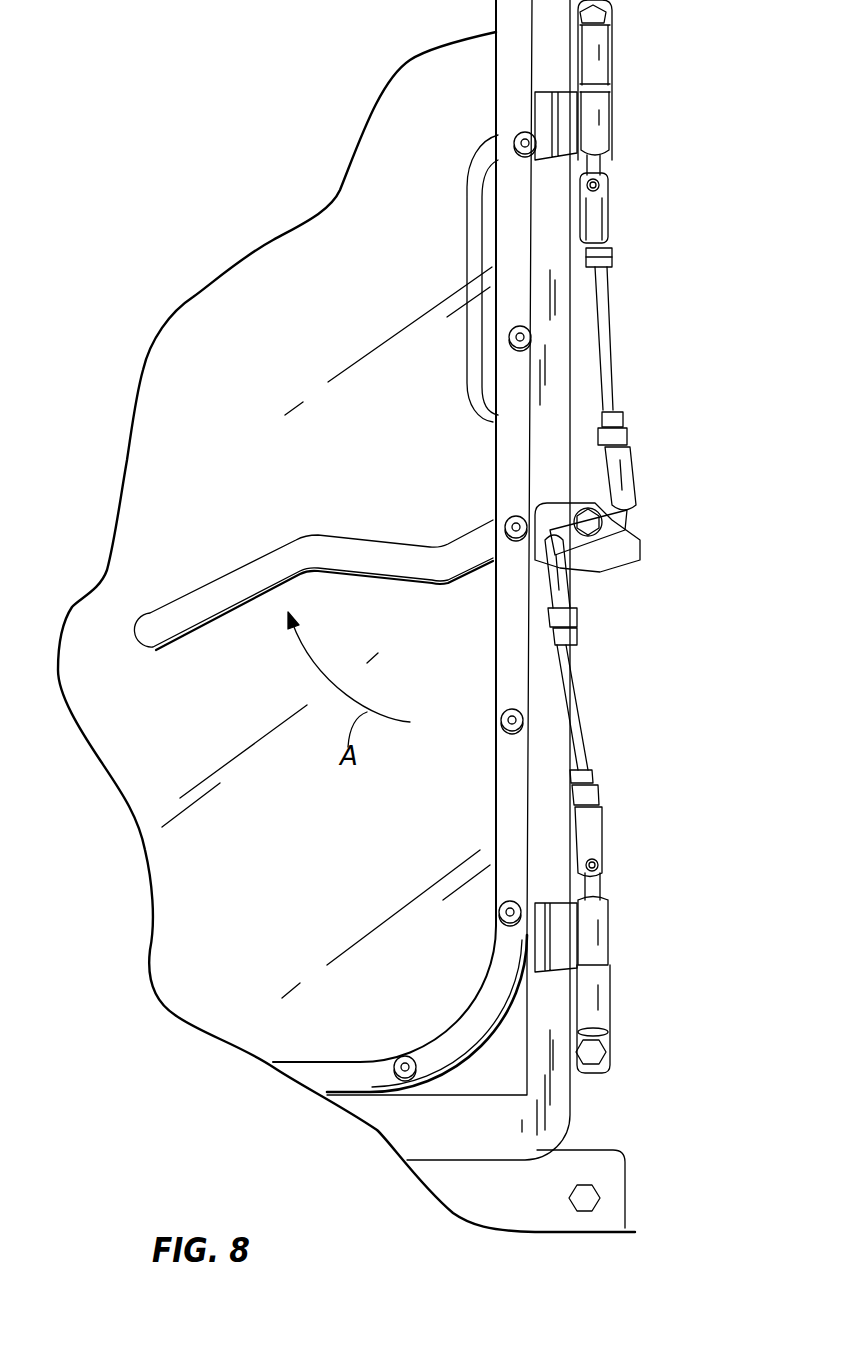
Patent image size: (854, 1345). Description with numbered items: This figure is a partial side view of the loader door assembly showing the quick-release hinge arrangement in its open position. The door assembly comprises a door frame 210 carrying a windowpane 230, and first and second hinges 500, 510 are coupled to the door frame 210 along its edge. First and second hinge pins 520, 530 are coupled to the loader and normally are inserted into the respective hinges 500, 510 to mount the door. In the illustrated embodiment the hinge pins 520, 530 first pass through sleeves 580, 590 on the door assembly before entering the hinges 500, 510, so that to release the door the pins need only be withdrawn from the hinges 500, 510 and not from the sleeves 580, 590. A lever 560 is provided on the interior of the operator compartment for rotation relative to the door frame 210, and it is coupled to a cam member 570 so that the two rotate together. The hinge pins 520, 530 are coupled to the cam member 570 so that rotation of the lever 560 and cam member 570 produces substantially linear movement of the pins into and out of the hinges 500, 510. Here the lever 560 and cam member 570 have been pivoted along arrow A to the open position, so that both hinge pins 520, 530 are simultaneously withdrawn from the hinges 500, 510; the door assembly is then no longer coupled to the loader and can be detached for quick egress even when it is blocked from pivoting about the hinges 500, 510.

The door frame 210 is at (432, 1125).
The windowpane 230 is at (187, 870).
The first hinge 500 is at (595, 42).
The second hinge 510 is at (592, 987).
The first hinge pin 520 is at (597, 162).
The second hinge pin 530 is at (595, 890).
The lever 560 is at (198, 603).
The cam member 570 is at (610, 540).
The sleeve 580 is at (593, 117).
The sleeve 590 is at (593, 913).